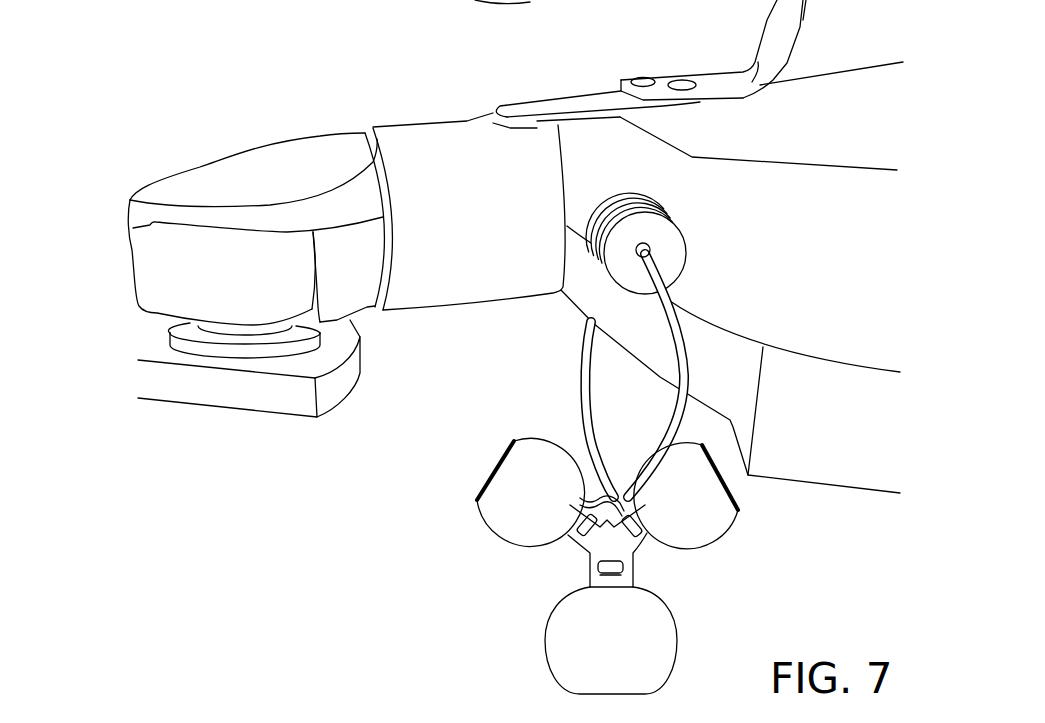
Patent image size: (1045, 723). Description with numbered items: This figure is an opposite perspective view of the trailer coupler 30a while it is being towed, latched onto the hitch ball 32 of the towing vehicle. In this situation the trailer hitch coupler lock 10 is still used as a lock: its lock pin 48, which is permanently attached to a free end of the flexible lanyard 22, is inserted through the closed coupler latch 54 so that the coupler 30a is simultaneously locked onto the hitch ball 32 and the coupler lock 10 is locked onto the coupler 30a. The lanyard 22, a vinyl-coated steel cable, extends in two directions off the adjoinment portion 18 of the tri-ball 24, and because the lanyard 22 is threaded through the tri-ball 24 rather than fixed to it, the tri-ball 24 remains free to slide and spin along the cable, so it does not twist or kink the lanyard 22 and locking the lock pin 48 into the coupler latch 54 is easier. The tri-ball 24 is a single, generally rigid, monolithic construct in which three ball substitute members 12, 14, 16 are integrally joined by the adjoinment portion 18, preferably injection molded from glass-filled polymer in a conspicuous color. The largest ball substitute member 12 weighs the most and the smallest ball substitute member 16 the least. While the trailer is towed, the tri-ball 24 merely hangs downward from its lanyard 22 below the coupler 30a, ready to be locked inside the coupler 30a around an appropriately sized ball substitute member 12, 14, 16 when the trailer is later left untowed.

The coupler 30a is at (329, 258).
The coupler latch 54 is at (780, 45).
The lock pin 48 is at (667, 238).
The lanyard 22 is at (673, 293).
The hitch ball 32 is at (235, 327).
The trailer hitch coupler lock 10 is at (509, 566).
The tri-ball 24 is at (540, 578).
The adjoinment portion 18 is at (622, 548).
The ball substitute member 16 is at (493, 510).
The ball substitute member 14 is at (713, 522).
The ball substitute member 12 is at (657, 622).